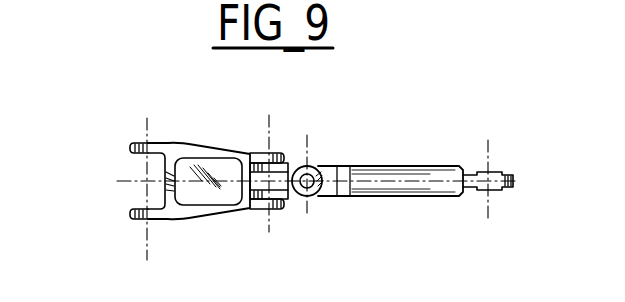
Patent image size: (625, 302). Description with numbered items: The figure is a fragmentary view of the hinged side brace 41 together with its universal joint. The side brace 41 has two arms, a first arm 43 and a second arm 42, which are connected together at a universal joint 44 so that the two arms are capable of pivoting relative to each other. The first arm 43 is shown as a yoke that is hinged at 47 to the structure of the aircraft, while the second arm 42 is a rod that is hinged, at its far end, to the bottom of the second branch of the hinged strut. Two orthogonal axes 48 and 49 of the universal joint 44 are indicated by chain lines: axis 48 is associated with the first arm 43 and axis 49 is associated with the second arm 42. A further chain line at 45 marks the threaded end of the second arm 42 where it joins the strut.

The hinged side brace 41 is at (337, 120).
The second arm 42 is at (402, 166).
The first arm 43 is at (208, 162).
The universal joint 44 is at (256, 206).
The threaded end axis 45 is at (489, 208).
The hinge 47 is at (148, 237).
The first axis of the universal joint 48 is at (273, 150).
The second axis of the universal joint 49 is at (307, 199).